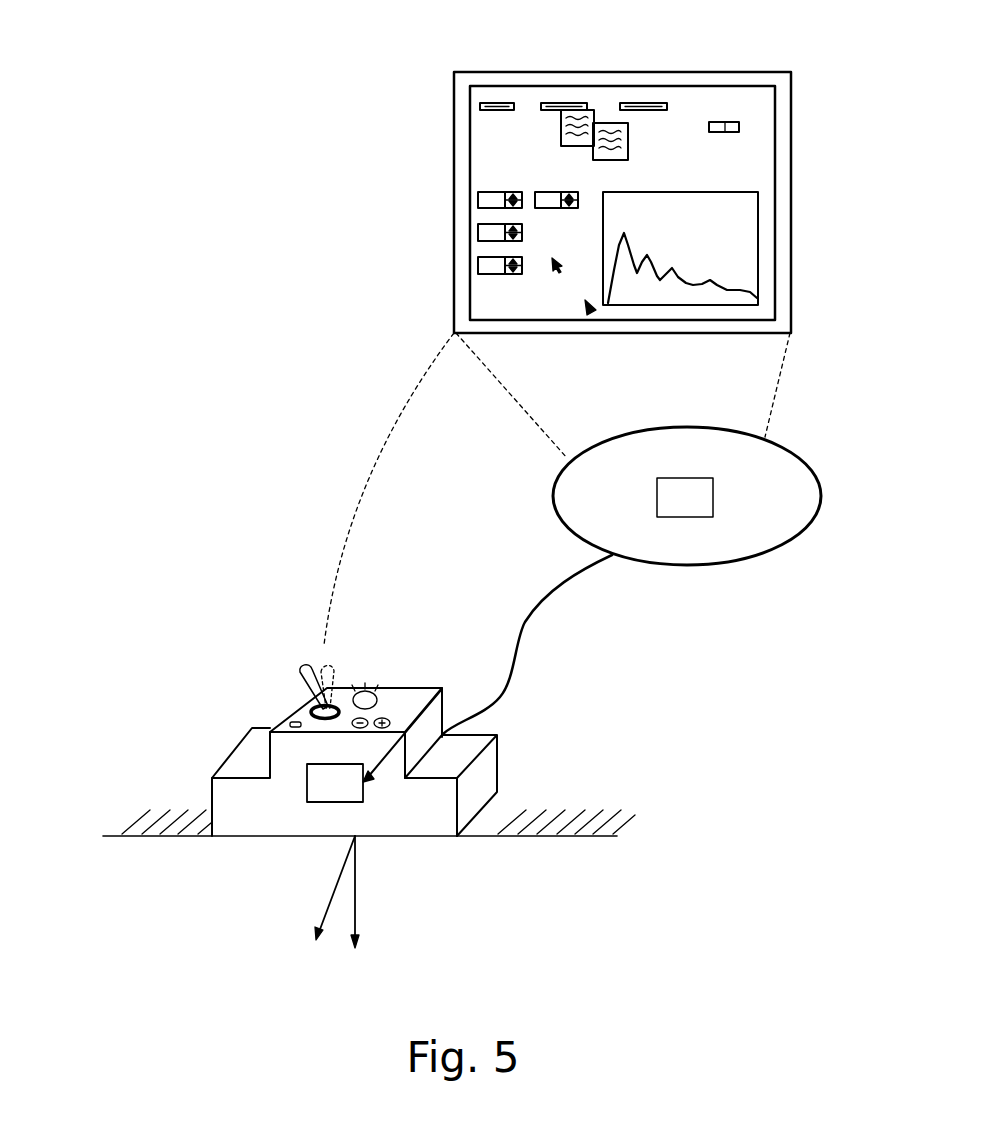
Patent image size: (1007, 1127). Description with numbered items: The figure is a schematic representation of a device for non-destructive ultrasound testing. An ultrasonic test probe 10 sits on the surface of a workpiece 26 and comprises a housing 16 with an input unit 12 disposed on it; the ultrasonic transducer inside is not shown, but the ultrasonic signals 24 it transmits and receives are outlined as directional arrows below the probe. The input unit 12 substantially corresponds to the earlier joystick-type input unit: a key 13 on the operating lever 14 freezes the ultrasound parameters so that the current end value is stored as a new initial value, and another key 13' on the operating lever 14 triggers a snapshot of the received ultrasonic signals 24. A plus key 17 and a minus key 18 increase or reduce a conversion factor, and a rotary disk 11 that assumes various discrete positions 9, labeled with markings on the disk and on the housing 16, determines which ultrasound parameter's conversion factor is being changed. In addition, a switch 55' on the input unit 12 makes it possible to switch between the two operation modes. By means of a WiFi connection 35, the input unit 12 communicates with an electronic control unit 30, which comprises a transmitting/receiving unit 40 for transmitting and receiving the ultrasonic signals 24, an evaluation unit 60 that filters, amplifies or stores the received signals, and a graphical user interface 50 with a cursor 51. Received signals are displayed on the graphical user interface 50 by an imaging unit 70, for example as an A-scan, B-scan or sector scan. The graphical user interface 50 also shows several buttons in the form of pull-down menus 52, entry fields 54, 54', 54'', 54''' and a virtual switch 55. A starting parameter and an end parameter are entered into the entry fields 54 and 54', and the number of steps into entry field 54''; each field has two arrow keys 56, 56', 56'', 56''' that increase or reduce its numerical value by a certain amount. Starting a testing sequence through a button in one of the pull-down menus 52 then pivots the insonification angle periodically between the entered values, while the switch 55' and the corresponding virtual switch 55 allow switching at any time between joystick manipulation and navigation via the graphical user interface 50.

The discrete positions 9 is at (368, 692).
The ultrasonic test probe 10 is at (339, 638).
The rotary disk 11 is at (370, 720).
The input unit 12 is at (290, 724).
The key 13 is at (301, 659).
The key 13' is at (278, 662).
The operating lever 14 is at (308, 710).
The housing 16 is at (405, 771).
The plus key 17 is at (391, 725).
The minus key 18 is at (392, 716).
The ultrasonic signals 24 is at (357, 877).
The workpiece 26 is at (583, 833).
The electronic control unit 30 is at (719, 80).
The WiFi connection 35 is at (367, 483).
The transmitting/receiving unit 40 is at (374, 746).
The graphical user interface 50 is at (590, 312).
The cursor 51 is at (553, 274).
The pull-down menus 52 is at (500, 101).
The entry field 54 is at (437, 194).
The entry field 54' is at (523, 170).
The entry field 54'' is at (430, 241).
The input field 54''' is at (431, 286).
The virtual switch 55 is at (760, 70).
The switch 55' is at (242, 717).
The arrow keys 56 is at (446, 212).
The arrow keys 56' is at (550, 168).
The arrow keys 56'' is at (445, 253).
The adjustment arrows 56''' is at (448, 299).
The evaluation unit 60 is at (687, 496).
The imaging unit 70 is at (738, 240).